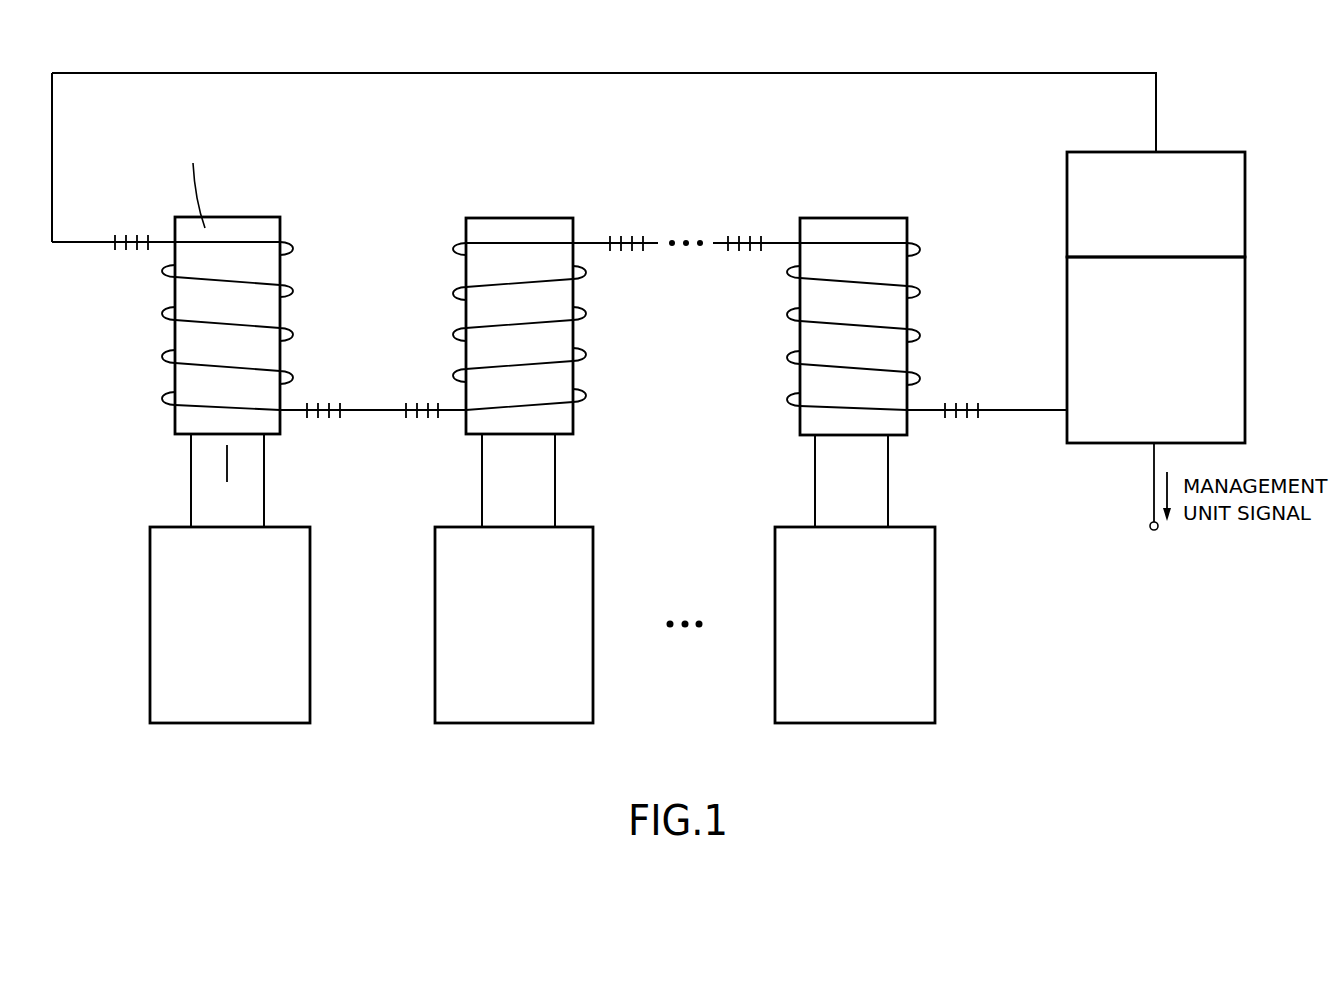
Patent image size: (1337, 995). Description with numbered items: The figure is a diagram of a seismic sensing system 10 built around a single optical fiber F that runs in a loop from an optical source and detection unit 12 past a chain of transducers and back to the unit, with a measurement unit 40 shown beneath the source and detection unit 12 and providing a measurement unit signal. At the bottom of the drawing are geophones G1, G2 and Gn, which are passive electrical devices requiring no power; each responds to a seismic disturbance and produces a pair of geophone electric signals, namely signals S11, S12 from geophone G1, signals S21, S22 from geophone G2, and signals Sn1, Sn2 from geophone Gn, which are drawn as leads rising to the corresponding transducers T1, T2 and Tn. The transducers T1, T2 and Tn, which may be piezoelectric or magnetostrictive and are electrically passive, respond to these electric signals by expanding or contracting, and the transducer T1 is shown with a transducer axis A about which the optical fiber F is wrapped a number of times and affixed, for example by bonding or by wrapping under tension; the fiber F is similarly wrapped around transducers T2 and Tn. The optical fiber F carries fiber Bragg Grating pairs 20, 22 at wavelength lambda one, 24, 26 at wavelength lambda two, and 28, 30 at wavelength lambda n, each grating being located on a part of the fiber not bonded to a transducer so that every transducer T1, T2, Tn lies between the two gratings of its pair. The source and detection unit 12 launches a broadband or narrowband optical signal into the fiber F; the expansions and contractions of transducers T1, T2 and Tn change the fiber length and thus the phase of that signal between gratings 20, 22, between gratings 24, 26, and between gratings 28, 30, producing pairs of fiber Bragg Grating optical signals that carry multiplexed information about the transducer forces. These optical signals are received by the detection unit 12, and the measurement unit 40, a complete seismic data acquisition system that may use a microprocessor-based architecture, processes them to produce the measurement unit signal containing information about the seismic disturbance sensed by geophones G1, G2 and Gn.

The seismic sensing system 10 is at (224, 40).
The optical fiber F is at (1022, 73).
The optical source and detection unit 12 is at (1237, 205).
The measurement unit 40 is at (1236, 362).
The fiber Bragg Grating 20 is at (123, 250).
The fiber Bragg Grating 22 is at (337, 408).
The fiber Bragg Grating 24 is at (426, 404).
The fiber Bragg Grating 26 is at (632, 262).
The fiber Bragg Grating 28 is at (750, 262).
The fiber Bragg Grating 30 is at (966, 408).
The transducer axis A is at (228, 211).
The transducer T1 is at (221, 333).
The transducer T2 is at (500, 233).
The transducer Tn is at (893, 228).
The geophone electric signal S11 is at (169, 480).
The geophone electric signal S12 is at (282, 480).
The geophone electric signal S21 is at (457, 480).
The geophone electric signal S22 is at (573, 480).
The geophone electric signal Sn1 is at (790, 481).
The geophone electric signal Sn2 is at (910, 481).
The geophone G1 is at (278, 708).
The geophone G2 is at (563, 708).
The geophone Gn is at (905, 708).